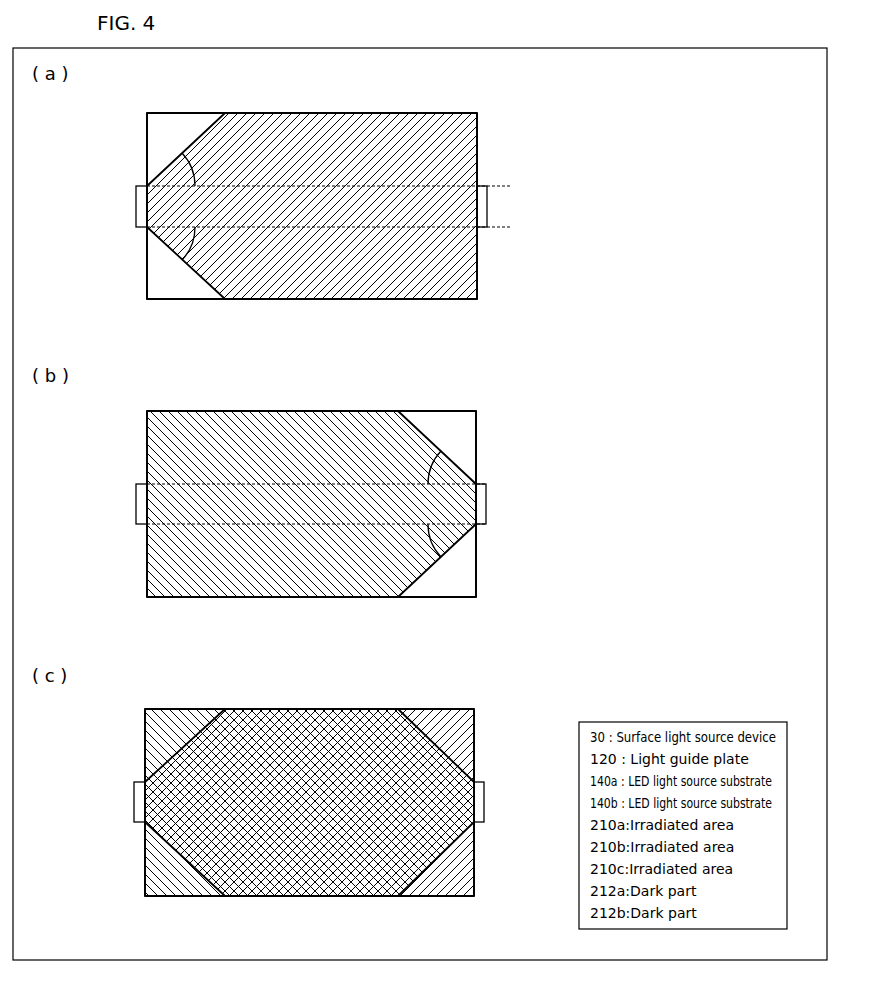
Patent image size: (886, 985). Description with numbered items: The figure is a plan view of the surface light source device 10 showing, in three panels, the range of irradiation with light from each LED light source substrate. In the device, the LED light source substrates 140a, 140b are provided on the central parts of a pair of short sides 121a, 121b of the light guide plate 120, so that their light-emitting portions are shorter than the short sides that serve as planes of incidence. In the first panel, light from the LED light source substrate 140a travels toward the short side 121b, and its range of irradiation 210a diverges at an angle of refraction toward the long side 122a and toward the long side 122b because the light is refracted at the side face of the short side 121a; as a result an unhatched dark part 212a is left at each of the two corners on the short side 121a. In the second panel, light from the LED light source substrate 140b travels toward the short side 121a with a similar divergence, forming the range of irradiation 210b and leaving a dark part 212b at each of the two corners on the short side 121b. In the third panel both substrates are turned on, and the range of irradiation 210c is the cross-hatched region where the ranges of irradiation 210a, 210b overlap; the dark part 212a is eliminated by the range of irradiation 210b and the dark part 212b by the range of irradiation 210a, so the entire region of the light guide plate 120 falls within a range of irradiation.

The surface light source device 10 is at (543, 118).
The light guide plate 120 is at (420, 113).
The short side 121a is at (147, 180).
The short side 121b is at (478, 177).
The long side 122a is at (253, 113).
The long side 122b is at (252, 299).
The LED light source substrate 140a is at (141, 208).
The LED light source substrate 140b is at (483, 208).
The range of irradiation 210a is at (470, 271).
The range of irradiation 210b is at (152, 569).
The range of irradiation 210c is at (310, 896).
The dark part 212a is at (155, 142).
The dark part 212b is at (466, 441).